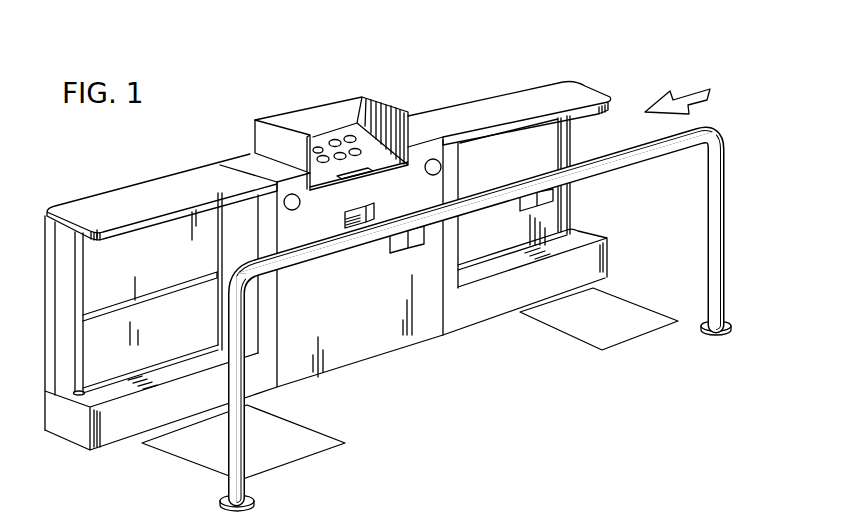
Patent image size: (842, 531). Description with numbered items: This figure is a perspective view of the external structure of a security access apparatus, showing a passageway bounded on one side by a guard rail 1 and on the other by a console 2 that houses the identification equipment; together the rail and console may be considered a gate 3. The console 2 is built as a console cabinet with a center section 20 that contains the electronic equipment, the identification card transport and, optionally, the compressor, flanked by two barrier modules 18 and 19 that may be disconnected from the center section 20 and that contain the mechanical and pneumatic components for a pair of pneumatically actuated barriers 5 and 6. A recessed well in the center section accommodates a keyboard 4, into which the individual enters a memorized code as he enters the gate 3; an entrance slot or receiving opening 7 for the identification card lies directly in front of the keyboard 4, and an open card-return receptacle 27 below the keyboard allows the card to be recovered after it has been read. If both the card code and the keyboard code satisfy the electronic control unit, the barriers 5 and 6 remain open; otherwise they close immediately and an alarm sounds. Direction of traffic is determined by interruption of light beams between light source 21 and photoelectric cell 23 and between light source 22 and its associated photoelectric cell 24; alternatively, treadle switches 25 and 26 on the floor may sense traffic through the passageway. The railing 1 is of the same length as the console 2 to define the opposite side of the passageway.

The guard rail 1 is at (716, 136).
The console 2 is at (166, 168).
The gate 3 is at (706, 91).
The keyboard 4 is at (336, 140).
The barrier 5 is at (569, 204).
The barrier 6 is at (74, 385).
The receiving opening 7 is at (356, 170).
The barrier module 18 is at (531, 298).
The barrier module 19 is at (177, 418).
The center section 20 is at (373, 348).
The light source 21 is at (409, 250).
The light source 22 is at (525, 203).
The photoelectric cell 23 is at (292, 210).
The photoelectric cell 24 is at (441, 169).
The treadle switch 25 is at (617, 343).
The treadle switch 26 is at (334, 441).
The card-return receptacle 27 is at (370, 212).